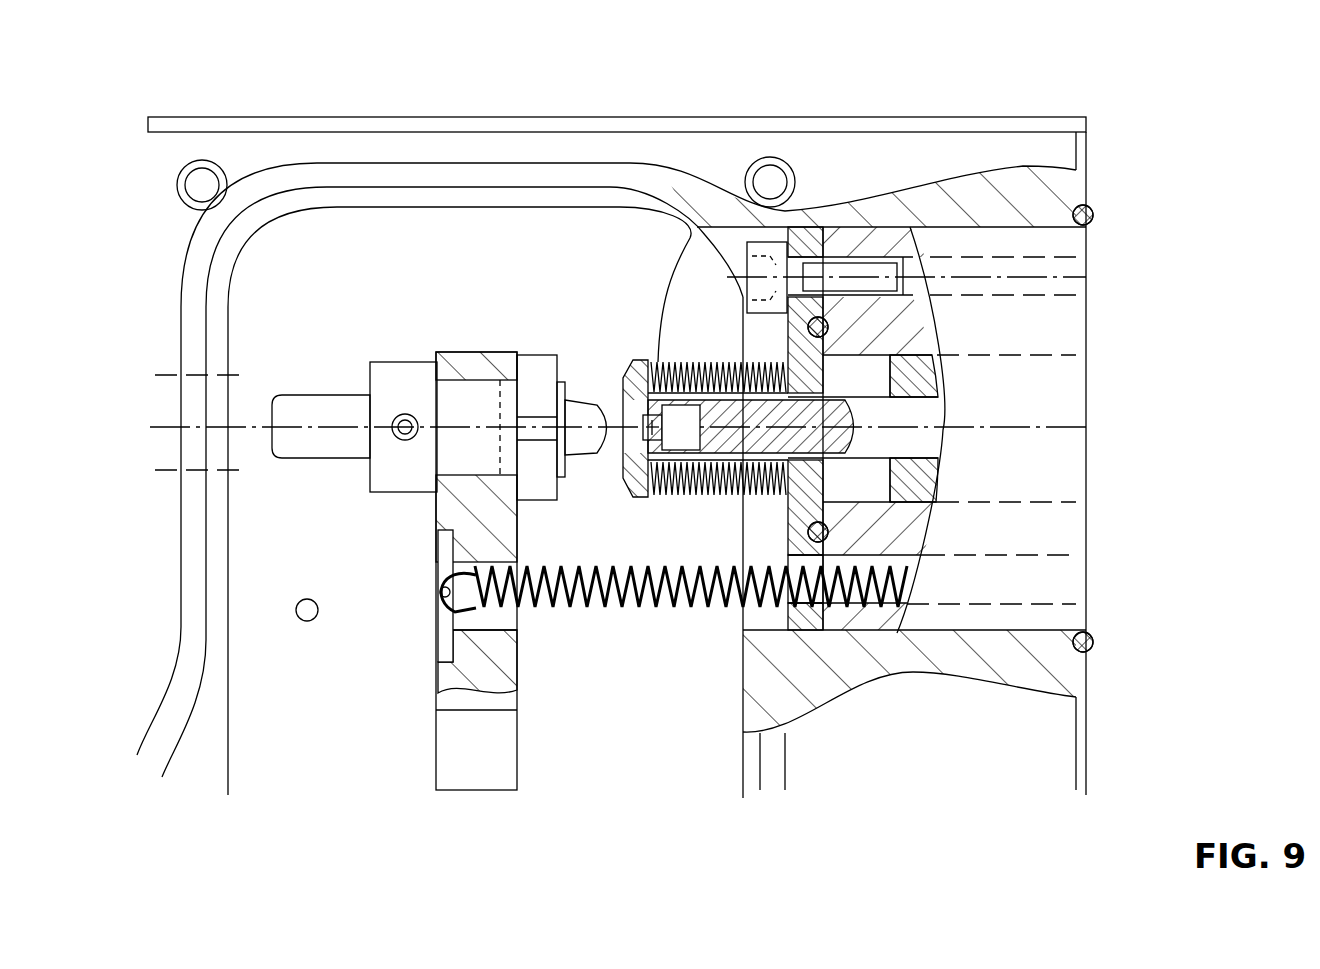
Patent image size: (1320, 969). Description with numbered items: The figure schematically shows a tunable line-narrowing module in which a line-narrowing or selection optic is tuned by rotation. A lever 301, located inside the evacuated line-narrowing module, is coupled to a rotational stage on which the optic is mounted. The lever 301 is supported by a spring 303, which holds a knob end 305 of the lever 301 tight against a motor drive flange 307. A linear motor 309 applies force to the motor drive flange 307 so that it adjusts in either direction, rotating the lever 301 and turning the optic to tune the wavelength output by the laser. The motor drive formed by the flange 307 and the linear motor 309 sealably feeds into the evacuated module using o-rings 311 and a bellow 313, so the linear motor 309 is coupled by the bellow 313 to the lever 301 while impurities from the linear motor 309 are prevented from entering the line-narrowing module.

The lever 301 is at (483, 765).
The spring 303 is at (617, 610).
The knob end 305 is at (623, 407).
The motor drive flange 307 is at (627, 474).
The linear motor 309 is at (1078, 484).
The o-rings 311 is at (1095, 212).
The bellow 313 is at (700, 222).